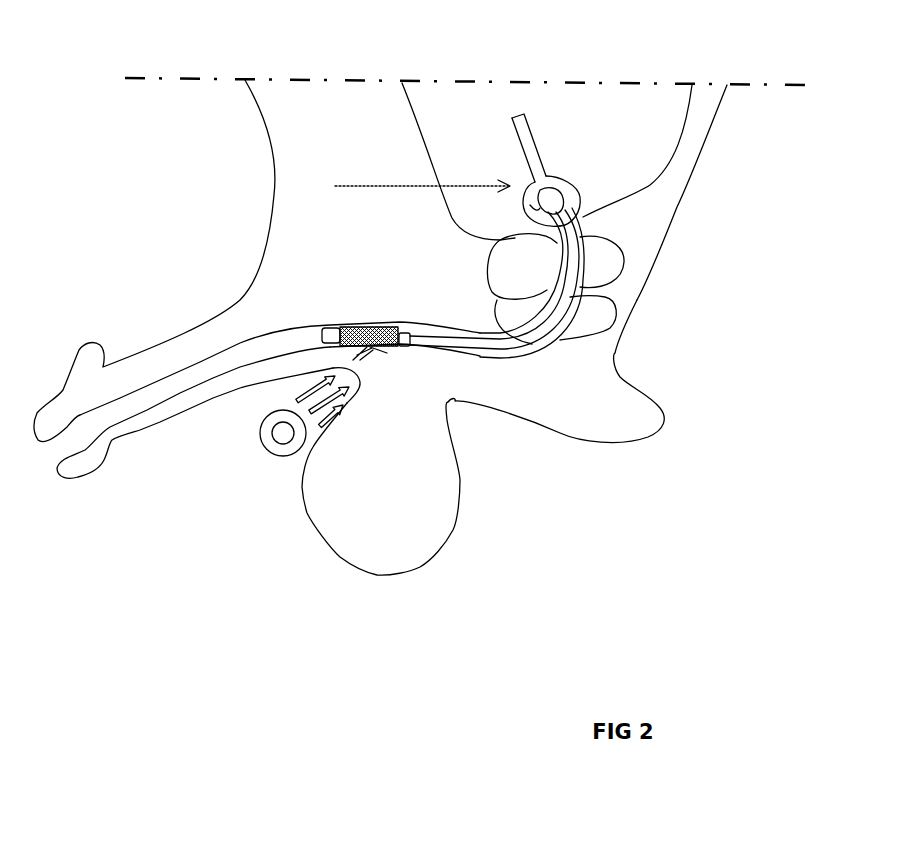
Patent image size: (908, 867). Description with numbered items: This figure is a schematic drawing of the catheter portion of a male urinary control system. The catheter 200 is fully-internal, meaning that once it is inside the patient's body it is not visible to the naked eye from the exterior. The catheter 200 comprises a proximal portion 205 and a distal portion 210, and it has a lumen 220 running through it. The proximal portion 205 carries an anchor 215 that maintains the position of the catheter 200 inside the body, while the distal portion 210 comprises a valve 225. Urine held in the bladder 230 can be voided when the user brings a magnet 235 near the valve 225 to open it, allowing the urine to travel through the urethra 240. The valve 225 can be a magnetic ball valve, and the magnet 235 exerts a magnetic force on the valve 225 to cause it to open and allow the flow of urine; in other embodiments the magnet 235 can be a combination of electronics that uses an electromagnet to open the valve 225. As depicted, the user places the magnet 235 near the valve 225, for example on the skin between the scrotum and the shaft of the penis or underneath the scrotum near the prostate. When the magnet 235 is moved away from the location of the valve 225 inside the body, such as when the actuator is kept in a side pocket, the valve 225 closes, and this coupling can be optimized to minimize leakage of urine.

The catheter 200 is at (560, 339).
The proximal portion 205 is at (512, 115).
The distal portion 210 is at (328, 322).
The anchor 215 is at (335, 186).
The lumen 220 is at (580, 282).
The valve 225 is at (497, 340).
The bladder 230 is at (663, 118).
The magnet 235 is at (283, 456).
The urethra 240 is at (80, 455).